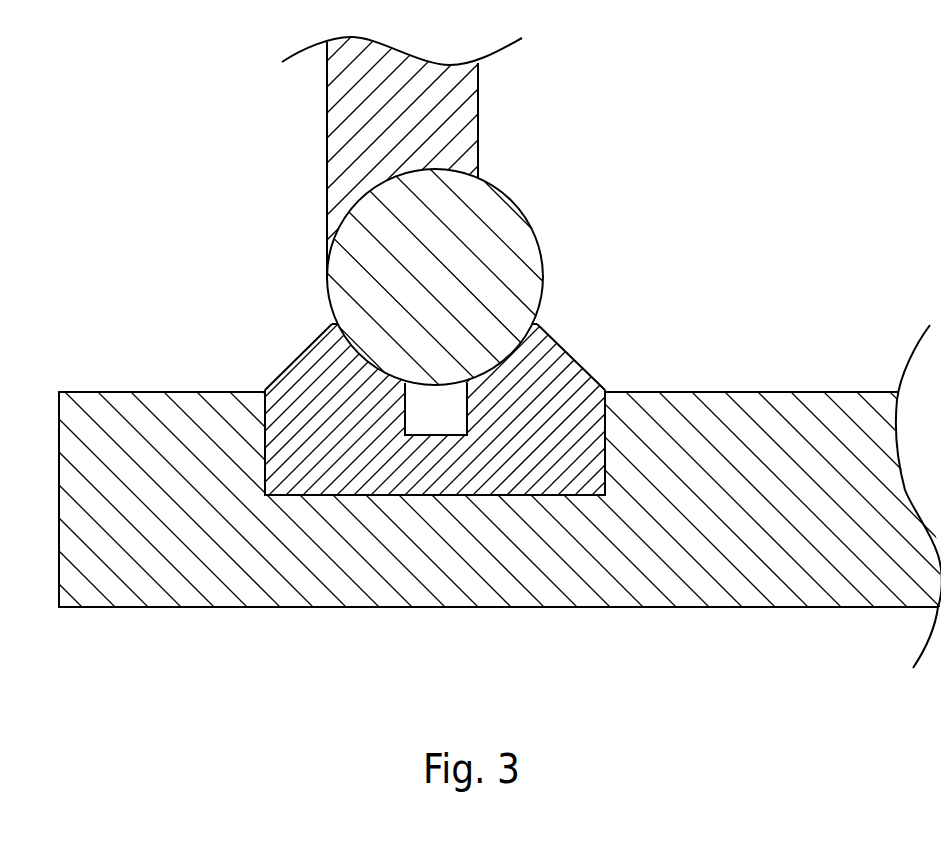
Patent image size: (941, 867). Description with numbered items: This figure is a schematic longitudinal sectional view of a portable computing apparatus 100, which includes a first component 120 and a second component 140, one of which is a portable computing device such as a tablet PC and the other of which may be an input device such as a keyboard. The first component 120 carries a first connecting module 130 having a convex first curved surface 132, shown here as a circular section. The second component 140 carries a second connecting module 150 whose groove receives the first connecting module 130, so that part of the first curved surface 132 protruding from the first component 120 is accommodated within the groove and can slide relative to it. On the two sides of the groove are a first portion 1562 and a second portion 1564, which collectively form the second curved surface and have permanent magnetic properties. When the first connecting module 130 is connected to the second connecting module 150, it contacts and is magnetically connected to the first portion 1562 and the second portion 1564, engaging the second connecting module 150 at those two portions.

The portable computing apparatus 100 is at (897, 81).
The first component 120 is at (470, 105).
The first connecting module 130 is at (517, 232).
The first curved surface 132 is at (438, 382).
The second component 140 is at (718, 597).
The second connecting module 150 is at (430, 408).
The first portion 1562 is at (505, 367).
The second portion 1564 is at (367, 365).